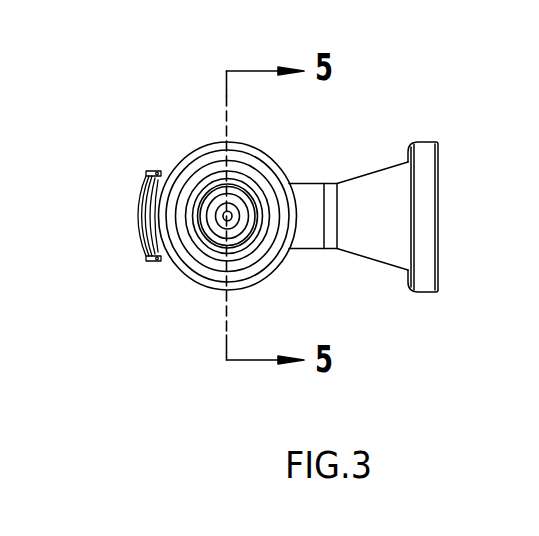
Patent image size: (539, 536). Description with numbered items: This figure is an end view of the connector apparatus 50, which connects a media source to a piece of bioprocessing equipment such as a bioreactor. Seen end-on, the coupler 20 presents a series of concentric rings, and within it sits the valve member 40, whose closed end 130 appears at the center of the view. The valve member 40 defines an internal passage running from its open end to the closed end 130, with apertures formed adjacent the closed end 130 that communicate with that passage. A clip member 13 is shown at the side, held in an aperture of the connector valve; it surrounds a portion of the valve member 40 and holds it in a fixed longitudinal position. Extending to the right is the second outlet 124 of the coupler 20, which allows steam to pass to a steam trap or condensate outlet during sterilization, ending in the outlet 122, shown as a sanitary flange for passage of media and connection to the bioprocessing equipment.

The connector apparatus 50 is at (362, 66).
The coupler 20 is at (270, 158).
The valve member 40 is at (212, 187).
The end 130 is at (217, 226).
The clip member 13 is at (148, 200).
The second outlet 124 is at (271, 274).
The outlet 122 is at (430, 215).